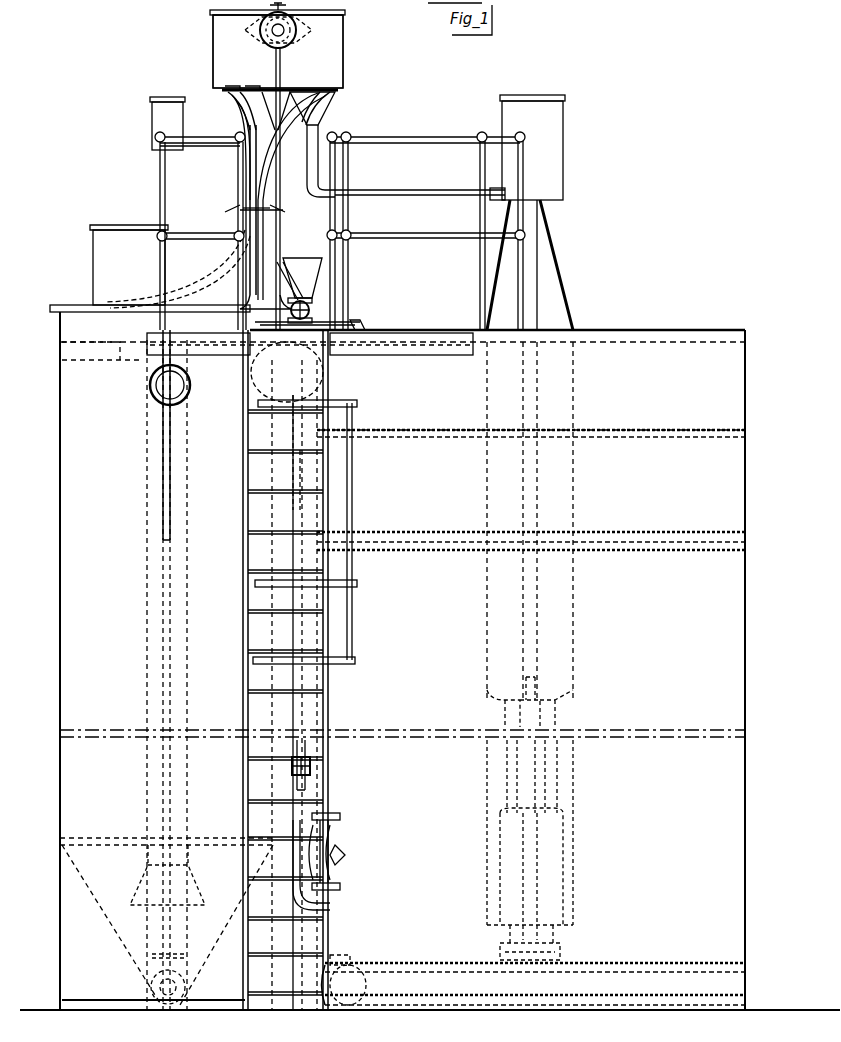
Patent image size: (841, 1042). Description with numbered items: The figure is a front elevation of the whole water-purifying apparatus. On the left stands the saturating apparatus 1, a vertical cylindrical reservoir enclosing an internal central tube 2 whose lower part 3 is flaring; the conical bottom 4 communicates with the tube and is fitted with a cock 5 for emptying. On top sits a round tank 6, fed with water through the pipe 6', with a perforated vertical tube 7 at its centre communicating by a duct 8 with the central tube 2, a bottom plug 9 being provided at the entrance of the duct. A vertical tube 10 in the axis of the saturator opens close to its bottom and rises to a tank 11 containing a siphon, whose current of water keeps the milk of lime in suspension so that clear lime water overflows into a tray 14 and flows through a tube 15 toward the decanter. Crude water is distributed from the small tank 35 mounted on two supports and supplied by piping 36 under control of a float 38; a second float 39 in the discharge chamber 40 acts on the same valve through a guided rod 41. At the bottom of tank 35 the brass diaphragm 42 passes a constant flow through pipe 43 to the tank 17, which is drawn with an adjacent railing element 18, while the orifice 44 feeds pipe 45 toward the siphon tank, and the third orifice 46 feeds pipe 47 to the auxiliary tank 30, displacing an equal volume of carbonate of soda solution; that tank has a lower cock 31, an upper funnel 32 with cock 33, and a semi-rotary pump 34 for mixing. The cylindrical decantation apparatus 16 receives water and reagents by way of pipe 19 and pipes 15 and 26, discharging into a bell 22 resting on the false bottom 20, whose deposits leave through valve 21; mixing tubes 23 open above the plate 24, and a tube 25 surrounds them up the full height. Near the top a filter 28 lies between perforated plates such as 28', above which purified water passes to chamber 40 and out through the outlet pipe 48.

The saturating apparatus 1 is at (75, 614).
The internal central tube 2 is at (185, 550).
The lower part of the central tube 3 is at (140, 885).
The conical bottom 4 is at (192, 963).
The cock 5 is at (160, 986).
The round tank 6 is at (118, 265).
The pipe 6' is at (275, 211).
The perforated vertical tube 7 is at (160, 262).
The duct 8 is at (160, 378).
The bottom plug 9 is at (243, 216).
The vertical tube 10 is at (165, 193).
The tank 11 is at (152, 118).
The tray 14 is at (118, 350).
The tube 15 is at (215, 365).
The cylindrical decantation apparatus 16 is at (735, 625).
The tank 17 is at (555, 148).
The railing 18 is at (500, 190).
The pipe 19 is at (530, 253).
The false bottom 20 is at (665, 963).
The valve 21 is at (352, 963).
The bell 22 is at (558, 860).
The mixing tubes 23 is at (512, 760).
The plate 24 is at (570, 695).
The tube 25 is at (490, 793).
The pipe 26 is at (420, 330).
The filter 28 is at (531, 459).
The perforated plate 28' is at (531, 416).
The auxiliary tank 30 is at (340, 615).
The lower cock 31 is at (310, 765).
The upper funnel 32 is at (310, 270).
The cock 33 is at (315, 308).
The semi-rotary pump 34 is at (345, 857).
The tank 35 is at (222, 21).
The piping 36 is at (284, 30).
The float 38 is at (252, 24).
The second float 39 is at (280, 383).
The chamber 40 is at (345, 390).
The guided rod 41 is at (282, 268).
The brass diaphragm 42 is at (320, 86).
The pipe 43 is at (312, 132).
The orifice 44 is at (240, 88).
The pipe 45 is at (215, 143).
The third orifice 46 is at (270, 90).
The pipe 47 is at (283, 289).
The outlet pipe 48 is at (310, 470).